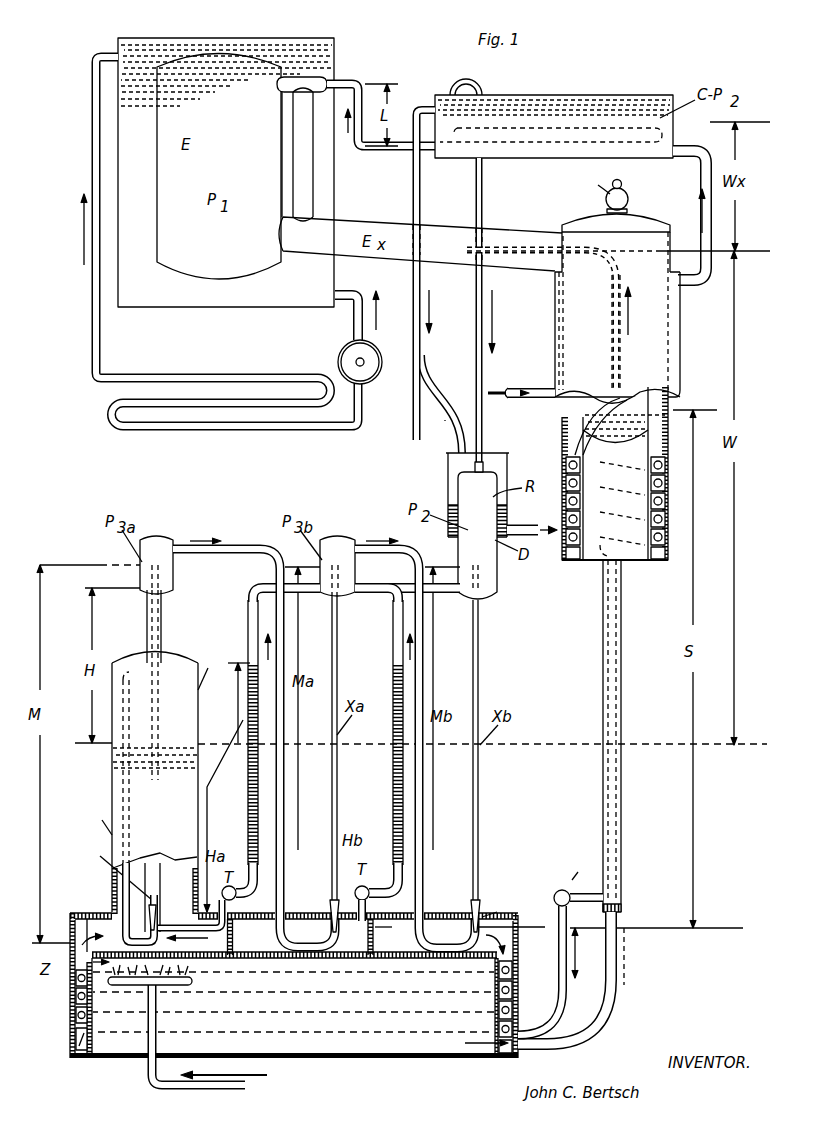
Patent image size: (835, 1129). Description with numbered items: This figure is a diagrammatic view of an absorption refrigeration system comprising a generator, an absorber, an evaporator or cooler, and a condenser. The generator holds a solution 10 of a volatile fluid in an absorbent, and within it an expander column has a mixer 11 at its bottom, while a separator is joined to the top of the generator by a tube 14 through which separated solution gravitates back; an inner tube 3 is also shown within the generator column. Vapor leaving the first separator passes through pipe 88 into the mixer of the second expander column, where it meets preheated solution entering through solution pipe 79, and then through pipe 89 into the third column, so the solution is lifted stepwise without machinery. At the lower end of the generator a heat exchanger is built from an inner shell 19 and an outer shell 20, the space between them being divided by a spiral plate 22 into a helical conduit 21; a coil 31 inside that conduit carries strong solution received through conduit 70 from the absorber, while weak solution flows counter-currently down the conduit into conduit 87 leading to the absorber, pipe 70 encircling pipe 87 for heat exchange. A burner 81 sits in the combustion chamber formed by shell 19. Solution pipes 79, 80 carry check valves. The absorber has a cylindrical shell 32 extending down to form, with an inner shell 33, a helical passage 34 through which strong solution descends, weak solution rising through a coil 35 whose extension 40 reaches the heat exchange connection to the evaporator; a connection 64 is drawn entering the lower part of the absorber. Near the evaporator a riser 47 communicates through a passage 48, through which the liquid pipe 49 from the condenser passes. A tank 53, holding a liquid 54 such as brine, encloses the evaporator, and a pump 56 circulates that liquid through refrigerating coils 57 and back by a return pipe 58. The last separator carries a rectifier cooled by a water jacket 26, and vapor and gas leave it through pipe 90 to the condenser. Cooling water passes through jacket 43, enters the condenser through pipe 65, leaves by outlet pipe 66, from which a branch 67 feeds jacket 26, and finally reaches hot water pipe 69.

The tube 3 is at (125, 888).
The solution 10 is at (155, 790).
The mixer 11 is at (153, 922).
The tube 14 is at (148, 628).
The inner shell 19 is at (93, 1030).
The outer shell 20 is at (75, 1031).
The helical conduit 21 is at (74, 1058).
The spiral plate 22 is at (398, 1005).
The water jacket 26 is at (505, 447).
The coil 31 is at (75, 992).
The cylindrical shell 32 is at (672, 410).
The inner shell 33 is at (600, 500).
The helical passage 34 is at (570, 562).
The coil 35 is at (668, 510).
The extension of coil 35 40 is at (520, 250).
The jacket 43 is at (680, 342).
The riser 47 is at (312, 195).
The passage 48 is at (312, 82).
The liquid pipe 49 is at (413, 149).
The tank 53 is at (240, 308).
The liquid 54 is at (158, 52).
The pump 56 is at (345, 348).
The refrigerating coils 57 is at (218, 392).
The return pipe 58 is at (92, 168).
The pipe 64 is at (536, 386).
The pipe 65 is at (700, 166).
The outlet pipe 66 is at (418, 218).
The branch 67 is at (442, 395).
The hot water pipe 69 is at (537, 522).
The conduit 70 is at (602, 788).
The solution pipe 79 is at (380, 780).
The solution pipe 80 is at (223, 816).
The burner 81 is at (235, 1082).
The conduit 87 is at (588, 1012).
The pipe 88 is at (270, 560).
The pipe 89 is at (418, 620).
The pipe 90 is at (477, 312).